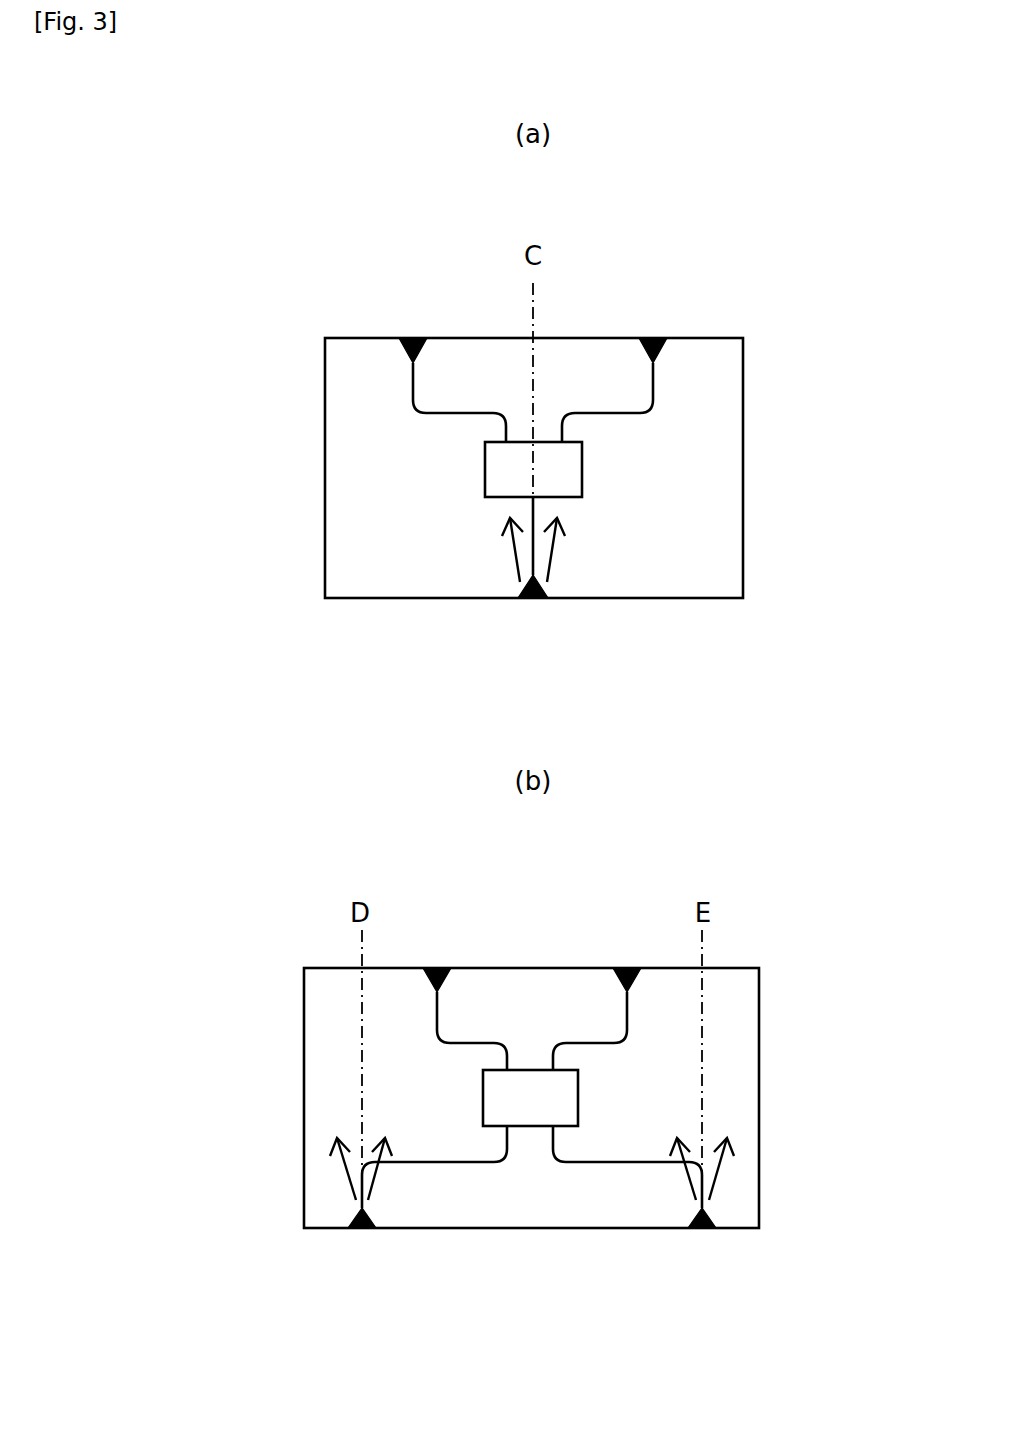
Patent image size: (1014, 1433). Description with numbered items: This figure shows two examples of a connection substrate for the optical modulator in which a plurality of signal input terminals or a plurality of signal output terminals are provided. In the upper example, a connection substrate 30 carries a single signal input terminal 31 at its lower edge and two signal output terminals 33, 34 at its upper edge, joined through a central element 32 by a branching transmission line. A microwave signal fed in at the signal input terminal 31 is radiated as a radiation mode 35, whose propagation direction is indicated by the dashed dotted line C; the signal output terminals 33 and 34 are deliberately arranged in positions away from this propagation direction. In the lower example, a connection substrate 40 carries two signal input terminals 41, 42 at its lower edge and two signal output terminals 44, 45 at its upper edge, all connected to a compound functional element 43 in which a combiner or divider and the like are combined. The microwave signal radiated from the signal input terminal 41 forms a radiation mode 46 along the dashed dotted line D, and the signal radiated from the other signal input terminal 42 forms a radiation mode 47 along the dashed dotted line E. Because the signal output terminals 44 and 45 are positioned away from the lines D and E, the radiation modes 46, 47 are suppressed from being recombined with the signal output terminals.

The connection substrate 30 is at (752, 431).
The signal input terminal 31 is at (535, 598).
The branching chamber 32 is at (485, 467).
The signal output terminal 33 is at (412, 338).
The signal output terminal 34 is at (655, 338).
The radiation mode 35 is at (557, 548).
The connection substrate 40 is at (769, 1061).
The signal input terminal 41 is at (365, 1228).
The signal input terminal 42 is at (704, 1228).
The compound functional element 43 is at (530, 1098).
The signal output terminal 44 is at (437, 968).
The signal output terminal 45 is at (629, 968).
The radiation mode 46 is at (343, 1177).
The radiation mode 47 is at (720, 1175).